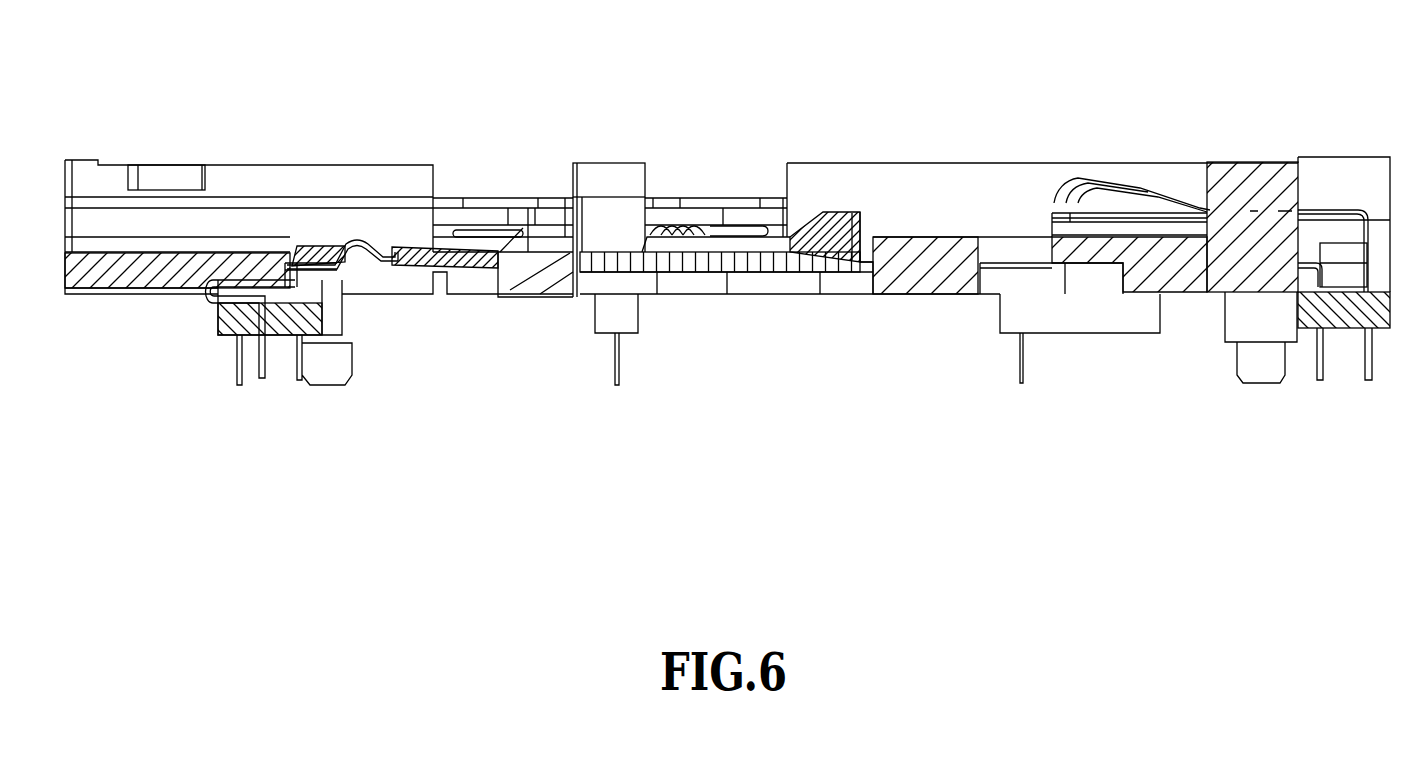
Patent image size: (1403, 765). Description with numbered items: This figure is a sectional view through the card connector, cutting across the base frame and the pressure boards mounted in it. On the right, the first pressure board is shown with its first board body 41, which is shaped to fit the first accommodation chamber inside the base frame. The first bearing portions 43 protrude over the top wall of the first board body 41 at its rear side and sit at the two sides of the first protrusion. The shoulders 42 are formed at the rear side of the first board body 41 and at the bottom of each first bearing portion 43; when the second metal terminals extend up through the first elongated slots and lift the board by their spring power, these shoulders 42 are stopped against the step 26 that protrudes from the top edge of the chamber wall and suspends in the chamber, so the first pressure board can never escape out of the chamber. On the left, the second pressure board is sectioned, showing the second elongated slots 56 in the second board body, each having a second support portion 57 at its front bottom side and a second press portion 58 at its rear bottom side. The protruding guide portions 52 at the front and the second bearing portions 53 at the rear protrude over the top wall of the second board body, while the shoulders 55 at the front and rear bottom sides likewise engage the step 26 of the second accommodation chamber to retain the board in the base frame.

The step 26 is at (285, 262).
The first board body 41 is at (727, 272).
The shoulder 42 is at (577, 268).
The first bearing portion 43 is at (837, 212).
The protruding guide portion 52 is at (290, 242).
The second bearing portion 53 is at (503, 258).
The shoulder 55 is at (287, 300).
The second elongated slot 56 is at (367, 258).
The second support portion 57 is at (397, 245).
The second press portion 58 is at (340, 292).